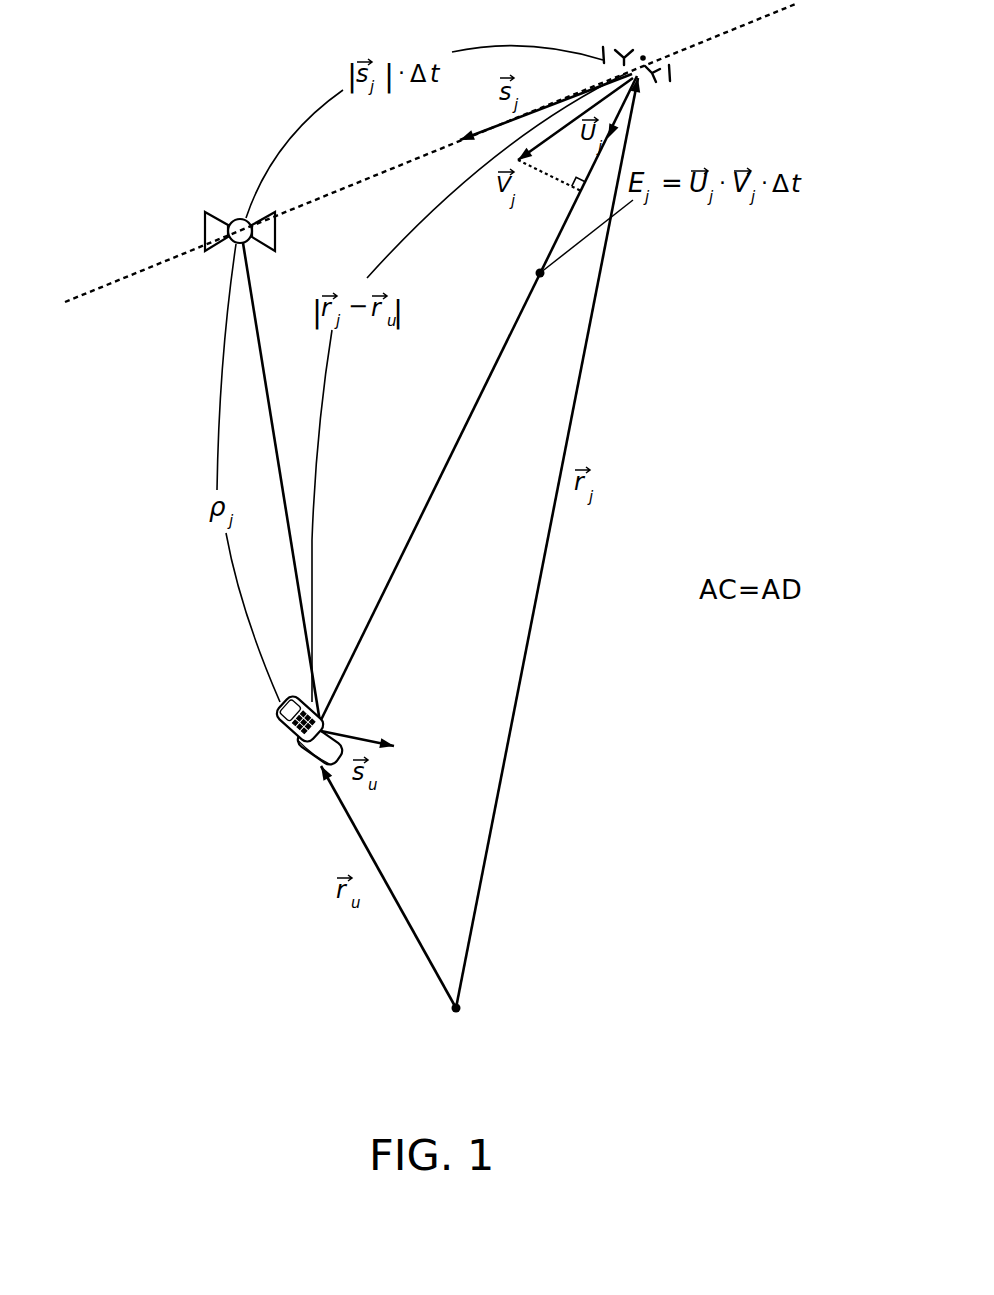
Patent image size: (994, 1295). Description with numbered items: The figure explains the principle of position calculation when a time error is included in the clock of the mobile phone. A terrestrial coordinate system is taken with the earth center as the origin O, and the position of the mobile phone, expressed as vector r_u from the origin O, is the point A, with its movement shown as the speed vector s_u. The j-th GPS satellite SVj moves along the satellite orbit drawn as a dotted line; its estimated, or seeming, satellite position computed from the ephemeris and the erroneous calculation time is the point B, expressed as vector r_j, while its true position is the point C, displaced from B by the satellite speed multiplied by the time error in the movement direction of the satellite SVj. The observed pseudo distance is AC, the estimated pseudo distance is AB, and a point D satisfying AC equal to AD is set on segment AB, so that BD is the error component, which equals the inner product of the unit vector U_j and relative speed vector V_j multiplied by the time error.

The position of the mobile phone A is at (304, 730).
The seeming satellite position B is at (636, 52).
The true satellite position C is at (240, 219).
The position satisfying AC=AD D is at (528, 274).
The origin of the terrestrial coordinate system O is at (455, 1025).
The j-th GPS satellite SVj is at (662, 56).